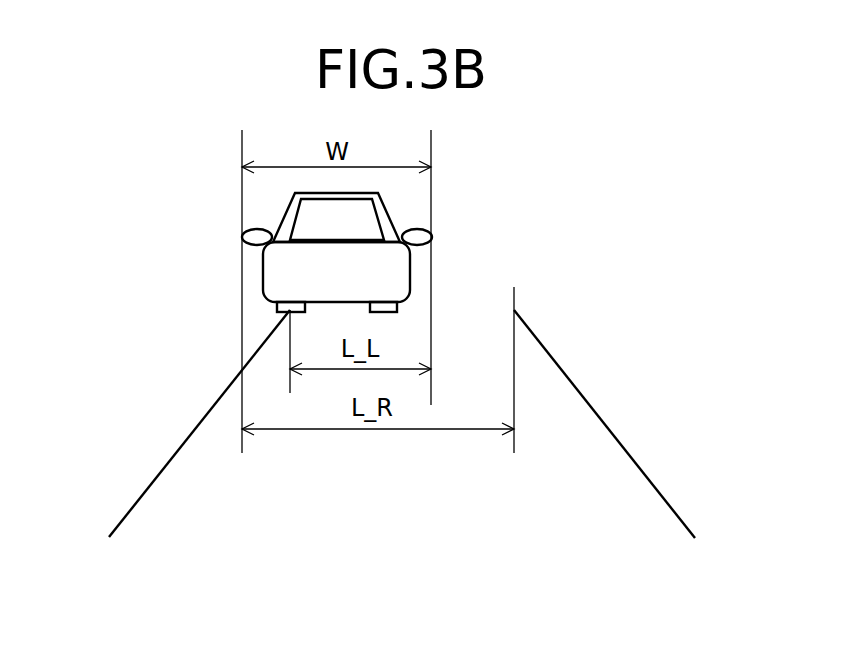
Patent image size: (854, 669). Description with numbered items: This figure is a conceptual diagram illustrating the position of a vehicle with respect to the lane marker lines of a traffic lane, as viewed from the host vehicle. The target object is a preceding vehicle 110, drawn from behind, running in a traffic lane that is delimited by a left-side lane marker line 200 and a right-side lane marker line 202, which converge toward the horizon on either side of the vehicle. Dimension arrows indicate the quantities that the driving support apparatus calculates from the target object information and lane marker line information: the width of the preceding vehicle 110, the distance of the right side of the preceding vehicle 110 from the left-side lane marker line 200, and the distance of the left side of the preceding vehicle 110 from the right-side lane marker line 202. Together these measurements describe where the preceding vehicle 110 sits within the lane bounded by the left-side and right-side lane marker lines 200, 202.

The preceding vehicle 110 is at (263, 277).
The left-side lane marker line 200 is at (183, 442).
The right-side lane marker line 202 is at (600, 417).